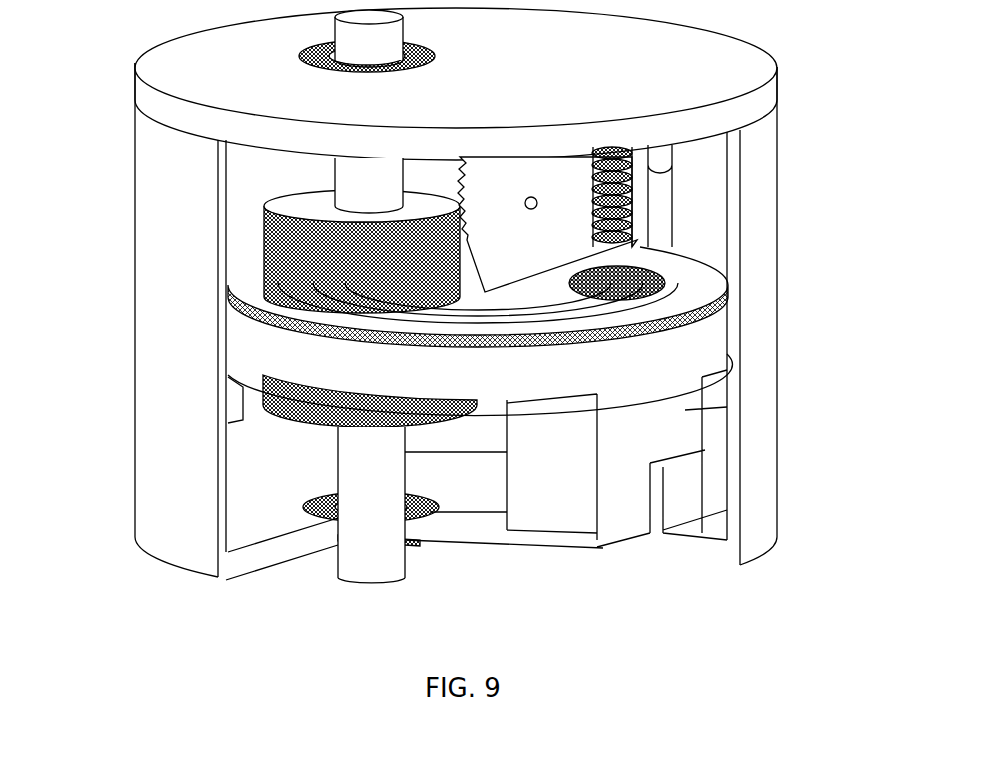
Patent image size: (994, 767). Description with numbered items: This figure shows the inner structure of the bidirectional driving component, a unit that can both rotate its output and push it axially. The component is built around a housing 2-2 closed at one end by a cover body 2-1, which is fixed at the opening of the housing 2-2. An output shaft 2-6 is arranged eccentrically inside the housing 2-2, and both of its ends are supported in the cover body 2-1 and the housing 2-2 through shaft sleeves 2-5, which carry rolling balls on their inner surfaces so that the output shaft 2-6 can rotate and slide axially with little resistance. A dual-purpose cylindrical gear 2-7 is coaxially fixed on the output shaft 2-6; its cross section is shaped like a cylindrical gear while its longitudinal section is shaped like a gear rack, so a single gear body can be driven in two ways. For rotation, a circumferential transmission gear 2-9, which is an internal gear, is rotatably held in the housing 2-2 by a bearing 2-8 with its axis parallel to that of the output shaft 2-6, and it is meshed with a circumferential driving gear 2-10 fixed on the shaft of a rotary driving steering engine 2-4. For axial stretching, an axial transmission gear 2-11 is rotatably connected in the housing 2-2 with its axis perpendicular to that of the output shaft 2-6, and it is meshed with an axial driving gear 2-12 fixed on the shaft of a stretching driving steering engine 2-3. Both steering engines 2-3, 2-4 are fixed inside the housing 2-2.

The cover body 2-1 is at (162, 73).
The housing 2-2 is at (162, 148).
The stretching driving steering engine 2-3 is at (688, 187).
The rotary driving steering engine 2-4 is at (685, 410).
The shaft sleeve 2-5 is at (417, 530).
The output shaft 2-6 is at (387, 563).
The dual-purpose cylindrical gear 2-7 is at (247, 248).
The bearing 2-8 is at (238, 350).
The circumferential transmission gear 2-9 is at (238, 292).
The circumferential driving gear 2-10 is at (673, 276).
The axial transmission gear 2-11 is at (487, 293).
The axial driving gear 2-12 is at (580, 173).